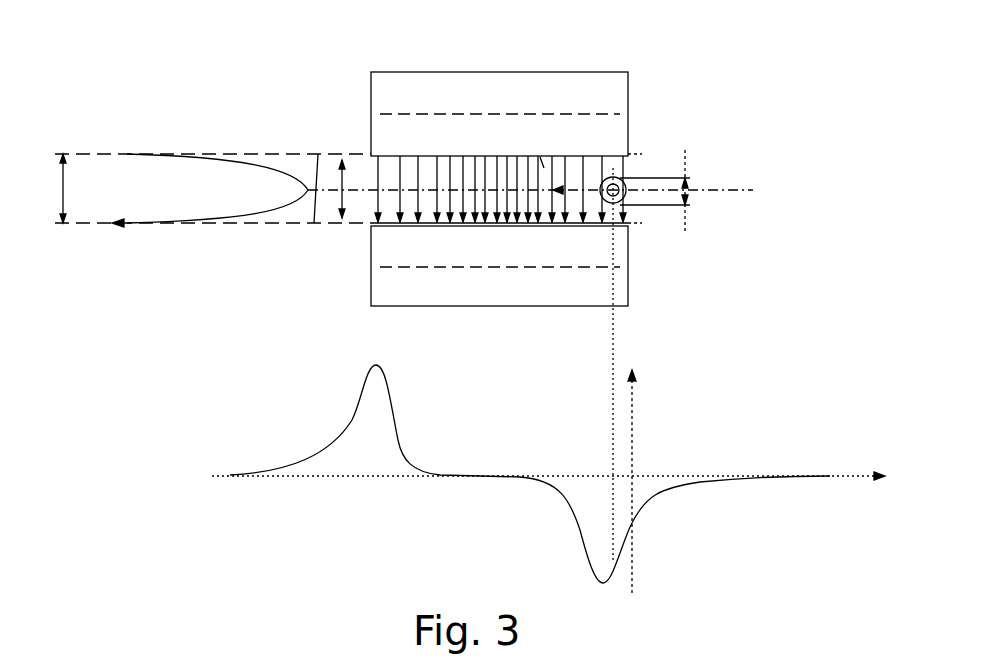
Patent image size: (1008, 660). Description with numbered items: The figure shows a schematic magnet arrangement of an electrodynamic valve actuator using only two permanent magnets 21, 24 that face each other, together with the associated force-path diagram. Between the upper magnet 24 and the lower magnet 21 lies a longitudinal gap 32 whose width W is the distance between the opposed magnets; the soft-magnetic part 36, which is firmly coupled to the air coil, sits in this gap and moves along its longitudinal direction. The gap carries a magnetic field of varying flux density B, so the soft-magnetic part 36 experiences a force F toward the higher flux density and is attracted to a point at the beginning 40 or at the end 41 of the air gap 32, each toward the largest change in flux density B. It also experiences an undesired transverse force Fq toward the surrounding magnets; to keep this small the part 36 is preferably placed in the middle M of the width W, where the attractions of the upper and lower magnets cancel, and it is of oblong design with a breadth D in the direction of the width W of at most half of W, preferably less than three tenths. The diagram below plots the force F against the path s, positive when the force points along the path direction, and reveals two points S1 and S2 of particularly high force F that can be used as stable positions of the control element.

The permanent magnet 21 is at (550, 297).
The permanent magnet 24 is at (530, 100).
The longitudinal gap 32 is at (542, 165).
The soft-magnetic part 36 is at (617, 178).
The beginning of the air gap 40 is at (632, 212).
The end of the air gap 41 is at (372, 165).
The flux density B is at (463, 172).
The middle of the width M is at (362, 190).
The width W is at (190, 188).
The breadth of the soft-magnetic part D is at (667, 191).
The transverse force Fq is at (113, 206).
The force F is at (631, 467).
The path s is at (548, 464).
The first point of high force S1 is at (375, 478).
The second point of high force S2 is at (598, 473).